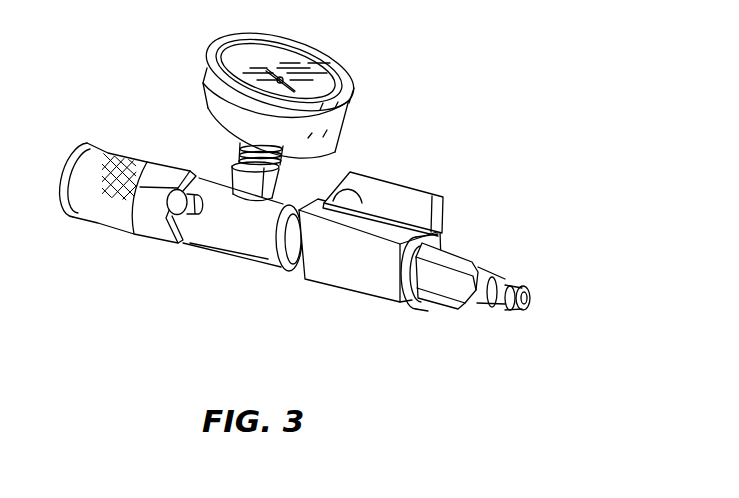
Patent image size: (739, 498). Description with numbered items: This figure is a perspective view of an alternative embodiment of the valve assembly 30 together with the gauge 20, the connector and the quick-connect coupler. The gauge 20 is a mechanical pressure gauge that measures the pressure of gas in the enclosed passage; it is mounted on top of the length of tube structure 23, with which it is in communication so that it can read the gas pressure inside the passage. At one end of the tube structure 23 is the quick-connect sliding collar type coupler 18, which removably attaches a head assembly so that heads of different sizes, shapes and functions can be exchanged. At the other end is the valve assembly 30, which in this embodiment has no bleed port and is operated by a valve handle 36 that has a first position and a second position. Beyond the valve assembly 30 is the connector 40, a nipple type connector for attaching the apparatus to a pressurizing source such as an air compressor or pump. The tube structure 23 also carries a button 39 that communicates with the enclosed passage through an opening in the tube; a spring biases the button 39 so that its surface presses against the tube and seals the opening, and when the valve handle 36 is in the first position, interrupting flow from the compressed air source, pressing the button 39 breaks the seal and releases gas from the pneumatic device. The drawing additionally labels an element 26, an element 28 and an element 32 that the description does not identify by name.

The quick-connect sliding collar type coupler 18 is at (153, 224).
The gauge 20 is at (335, 52).
The tube structure 23 is at (237, 228).
The pressure gauge 26 is at (207, 79).
The ring 28 is at (284, 240).
The valve assembly 30 is at (435, 156).
The valve body 32 is at (347, 268).
The valve handle 36 is at (447, 205).
The button 39 is at (188, 240).
The connector 40 is at (473, 287).